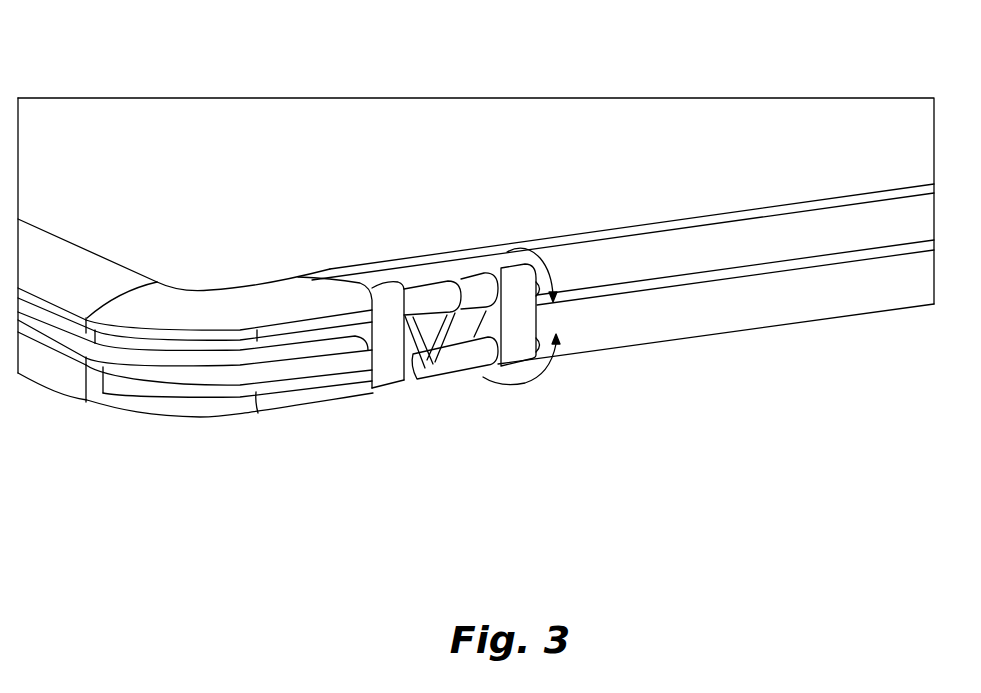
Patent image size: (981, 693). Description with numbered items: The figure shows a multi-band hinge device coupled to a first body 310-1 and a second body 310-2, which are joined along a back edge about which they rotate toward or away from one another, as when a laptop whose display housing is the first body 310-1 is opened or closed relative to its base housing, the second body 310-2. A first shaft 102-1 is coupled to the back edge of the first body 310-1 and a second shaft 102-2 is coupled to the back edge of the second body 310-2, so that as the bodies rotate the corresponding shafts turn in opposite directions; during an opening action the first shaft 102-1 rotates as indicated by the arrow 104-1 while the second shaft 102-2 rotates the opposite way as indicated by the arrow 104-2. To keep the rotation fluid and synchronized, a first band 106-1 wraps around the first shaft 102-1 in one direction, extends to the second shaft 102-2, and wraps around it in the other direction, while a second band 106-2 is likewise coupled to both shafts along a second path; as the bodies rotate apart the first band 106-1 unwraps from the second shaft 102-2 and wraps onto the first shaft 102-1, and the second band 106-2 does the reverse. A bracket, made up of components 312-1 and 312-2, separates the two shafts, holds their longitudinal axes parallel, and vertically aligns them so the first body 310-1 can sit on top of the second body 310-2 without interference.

The first body 310-1 is at (269, 160).
The second body 310-2 is at (787, 303).
The bracket component 312-1 is at (386, 350).
The bracket component 312-2 is at (523, 327).
The first shaft 102-1 is at (425, 298).
The second shaft 102-2 is at (462, 353).
The first band 106-1 is at (420, 362).
The second band 106-2 is at (468, 292).
The arrow 104-1 is at (540, 257).
The arrow 104-2 is at (523, 388).